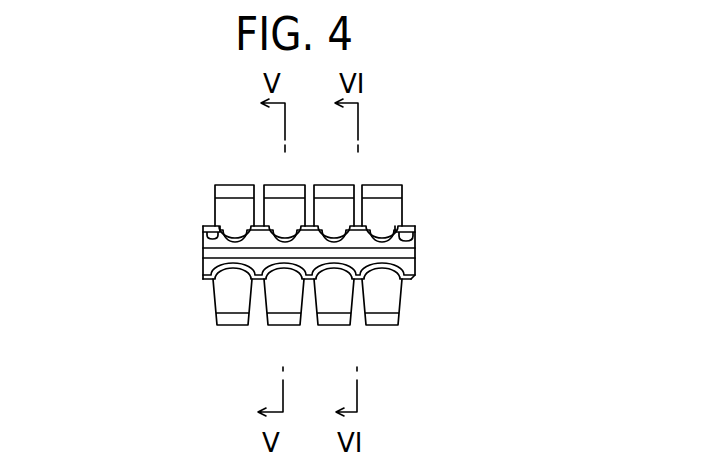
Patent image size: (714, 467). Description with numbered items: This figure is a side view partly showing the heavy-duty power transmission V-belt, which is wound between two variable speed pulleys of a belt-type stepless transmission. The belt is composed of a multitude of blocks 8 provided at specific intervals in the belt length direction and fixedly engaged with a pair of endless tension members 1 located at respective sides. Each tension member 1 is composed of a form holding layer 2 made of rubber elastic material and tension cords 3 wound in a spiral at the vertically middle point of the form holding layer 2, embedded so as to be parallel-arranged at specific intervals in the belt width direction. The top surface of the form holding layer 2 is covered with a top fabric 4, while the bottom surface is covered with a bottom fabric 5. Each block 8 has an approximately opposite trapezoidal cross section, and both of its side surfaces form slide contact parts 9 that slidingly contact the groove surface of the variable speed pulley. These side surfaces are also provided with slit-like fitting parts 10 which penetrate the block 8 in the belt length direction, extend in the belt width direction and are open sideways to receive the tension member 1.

The tension member 1 is at (421, 242).
The form holding layer 2 is at (203, 247).
The tension cord 3 is at (203, 256).
The top fabric 4 is at (203, 231).
The bottom fabric 5 is at (203, 270).
The block 8 is at (230, 183).
The slide contact part 9 is at (283, 305).
The fitting part 10 is at (206, 228).